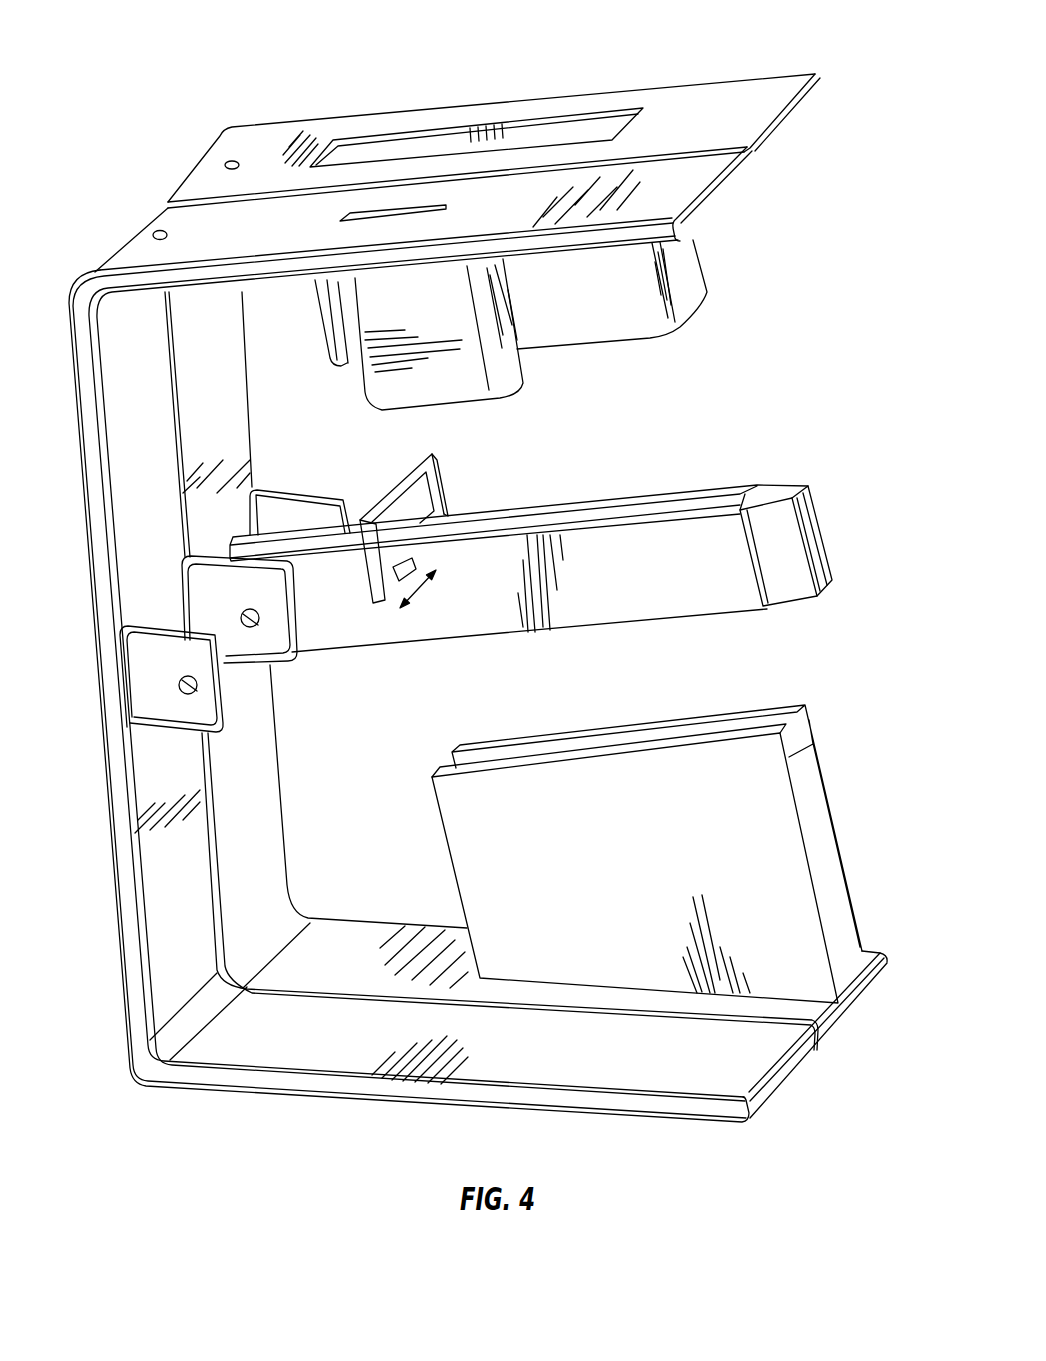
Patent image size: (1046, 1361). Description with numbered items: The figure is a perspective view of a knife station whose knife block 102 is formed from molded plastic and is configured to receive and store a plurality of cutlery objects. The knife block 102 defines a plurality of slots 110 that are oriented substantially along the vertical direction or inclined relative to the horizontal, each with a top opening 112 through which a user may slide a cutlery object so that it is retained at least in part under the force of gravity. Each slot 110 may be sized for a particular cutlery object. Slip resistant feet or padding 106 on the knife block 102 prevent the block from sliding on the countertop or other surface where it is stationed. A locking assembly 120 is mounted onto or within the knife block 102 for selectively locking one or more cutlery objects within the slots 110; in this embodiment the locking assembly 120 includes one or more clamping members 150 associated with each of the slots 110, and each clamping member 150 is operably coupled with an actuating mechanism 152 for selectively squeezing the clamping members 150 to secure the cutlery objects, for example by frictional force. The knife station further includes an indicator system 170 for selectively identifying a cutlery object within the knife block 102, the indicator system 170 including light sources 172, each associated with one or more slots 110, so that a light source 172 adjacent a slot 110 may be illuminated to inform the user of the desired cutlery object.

The knife block 102 is at (464, 591).
The slip resistant feet or padding 106 is at (340, 1098).
The slots 110 is at (622, 503).
The top opening 112 is at (399, 198).
The locking assembly 120 is at (435, 560).
The clamping member 150 is at (405, 561).
The actuating mechanism 152 is at (405, 475).
The indicator system 170 is at (147, 254).
The light source 172 is at (233, 160).